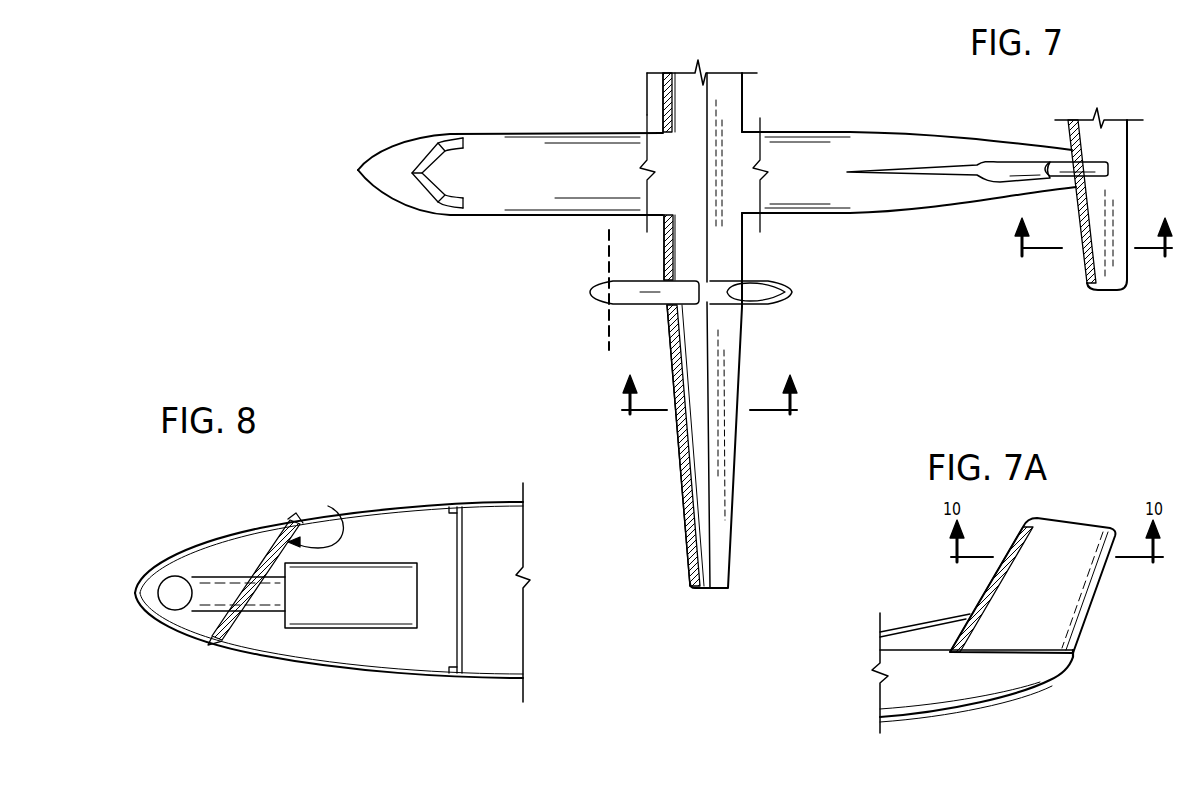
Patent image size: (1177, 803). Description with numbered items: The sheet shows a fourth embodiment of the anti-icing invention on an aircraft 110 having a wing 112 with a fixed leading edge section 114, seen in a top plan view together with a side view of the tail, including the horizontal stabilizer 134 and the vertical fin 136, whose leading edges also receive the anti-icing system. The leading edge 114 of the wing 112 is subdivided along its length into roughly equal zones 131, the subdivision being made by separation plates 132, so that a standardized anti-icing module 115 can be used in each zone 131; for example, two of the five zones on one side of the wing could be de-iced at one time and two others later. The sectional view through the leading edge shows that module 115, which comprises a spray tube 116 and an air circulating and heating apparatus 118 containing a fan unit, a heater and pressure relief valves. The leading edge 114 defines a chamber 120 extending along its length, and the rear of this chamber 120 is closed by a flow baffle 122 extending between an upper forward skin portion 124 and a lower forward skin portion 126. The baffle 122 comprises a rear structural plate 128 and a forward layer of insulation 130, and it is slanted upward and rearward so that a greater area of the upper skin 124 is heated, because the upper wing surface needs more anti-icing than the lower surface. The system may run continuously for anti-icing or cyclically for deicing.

In FIG. 7, the aircraft 110 is at (522, 127).
In FIG. 7, the wing 112 is at (733, 337).
In FIG. 7, the fixed leading edge section 114 is at (688, 528).
In FIG. 8, the fixed leading edge section 114 is at (135, 590).
In FIG. 8, the anti-icing module 115 is at (365, 557).
In FIG. 8, the spray tube 116 is at (165, 588).
In FIG. 8, the air circulating and heating apparatus 118 is at (398, 562).
In FIG. 8, the chamber 120 is at (193, 557).
In FIG. 8, the flow baffle 122 is at (325, 505).
In FIG. 8, the upper forward skin portion 124 is at (262, 522).
In FIG. 8, the lower forward skin portion 126 is at (215, 634).
In FIG. 8, the rear structural plate 128 is at (338, 510).
In FIG. 8, the forward layer of insulation 130 is at (268, 548).
In FIG. 7, the zones 131 is at (663, 250).
In FIG. 7, the separation plates 132 is at (678, 442).
In FIG. 7, the horizontal stabilizer 134 is at (1097, 268).
In FIG. 7, the vertical fin 136 is at (1005, 162).
In FIG. 7A, the vertical fin 136 is at (1010, 597).